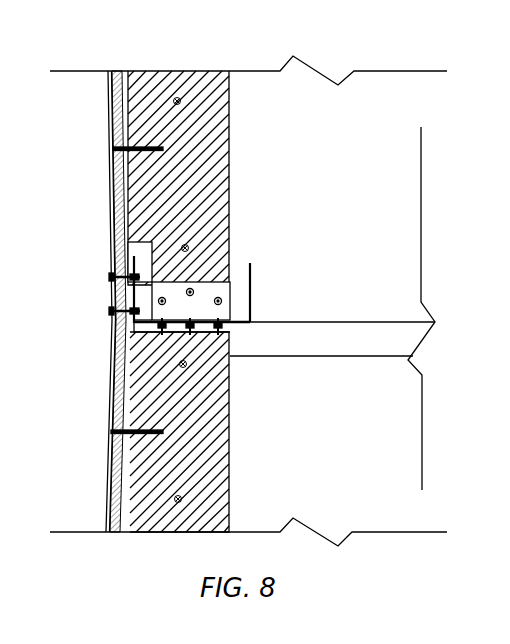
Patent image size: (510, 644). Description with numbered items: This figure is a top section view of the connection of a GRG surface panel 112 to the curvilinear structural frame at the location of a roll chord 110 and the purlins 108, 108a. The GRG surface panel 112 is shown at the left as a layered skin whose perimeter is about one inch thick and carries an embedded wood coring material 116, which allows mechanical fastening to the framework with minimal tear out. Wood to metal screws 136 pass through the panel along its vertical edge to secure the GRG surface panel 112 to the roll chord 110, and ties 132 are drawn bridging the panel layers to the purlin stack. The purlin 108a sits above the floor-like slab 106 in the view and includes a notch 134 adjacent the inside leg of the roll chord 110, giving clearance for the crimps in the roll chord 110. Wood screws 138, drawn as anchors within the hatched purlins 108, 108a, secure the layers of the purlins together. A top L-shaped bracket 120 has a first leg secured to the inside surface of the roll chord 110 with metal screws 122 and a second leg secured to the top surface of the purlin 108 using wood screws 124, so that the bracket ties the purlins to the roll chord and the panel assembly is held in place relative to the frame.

The floor slab 106 is at (355, 333).
The purlin 108 is at (221, 456).
The adjacent purlin 108a is at (219, 158).
The roll chord 110 is at (252, 293).
The GRG surface panel 112 is at (113, 112).
The wood coring material 116 is at (112, 83).
The top L-shaped bracket 120 is at (227, 310).
The metal screws 122 is at (153, 337).
The wood screws 124 is at (190, 292).
The tie 132 is at (113, 151).
The notch 134 is at (130, 243).
The wood to metal screws 136 is at (115, 278).
The wood screws 138 is at (180, 99).